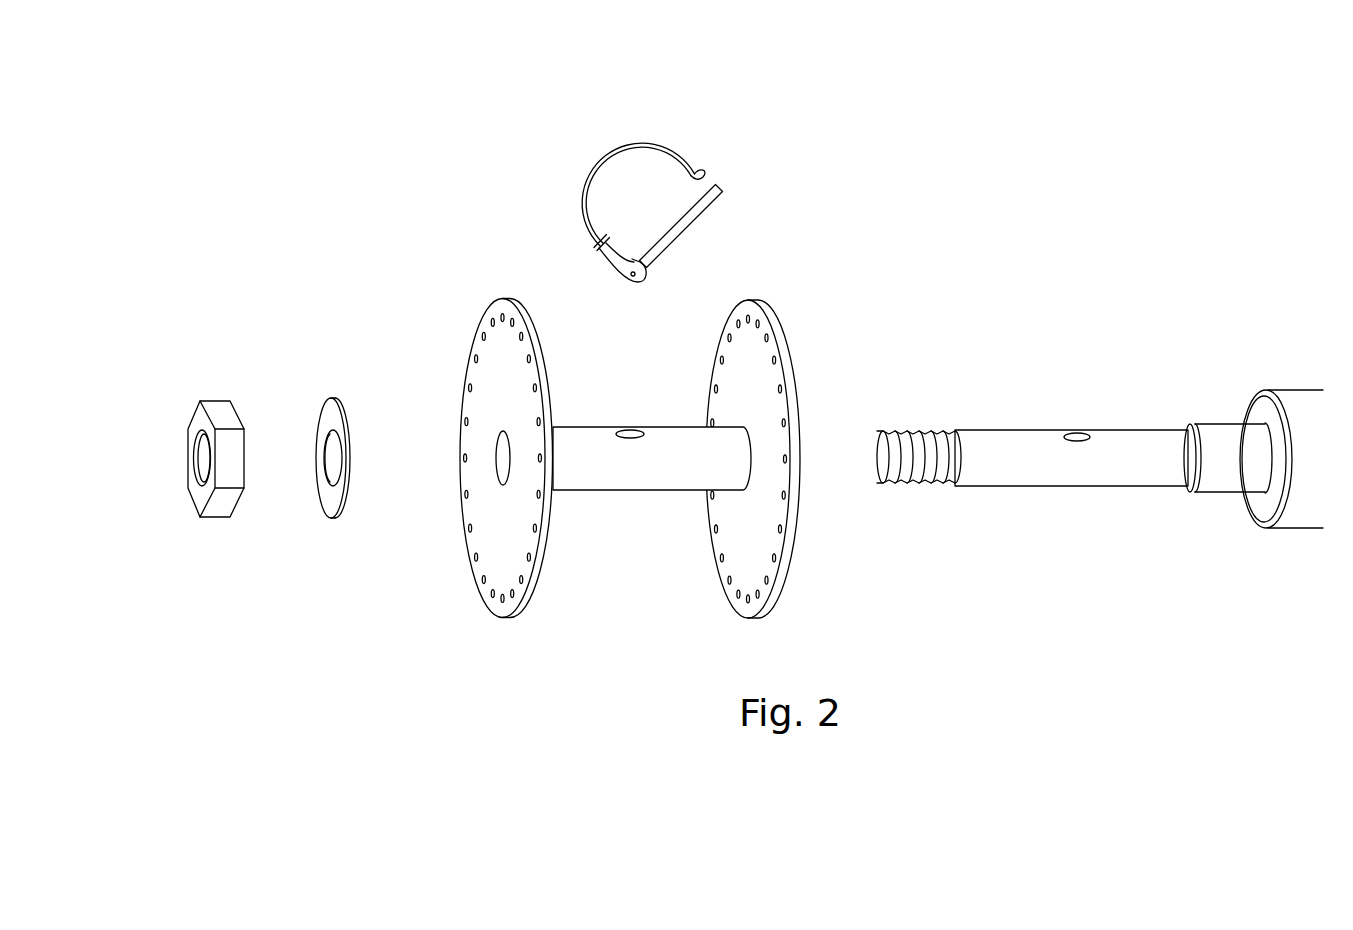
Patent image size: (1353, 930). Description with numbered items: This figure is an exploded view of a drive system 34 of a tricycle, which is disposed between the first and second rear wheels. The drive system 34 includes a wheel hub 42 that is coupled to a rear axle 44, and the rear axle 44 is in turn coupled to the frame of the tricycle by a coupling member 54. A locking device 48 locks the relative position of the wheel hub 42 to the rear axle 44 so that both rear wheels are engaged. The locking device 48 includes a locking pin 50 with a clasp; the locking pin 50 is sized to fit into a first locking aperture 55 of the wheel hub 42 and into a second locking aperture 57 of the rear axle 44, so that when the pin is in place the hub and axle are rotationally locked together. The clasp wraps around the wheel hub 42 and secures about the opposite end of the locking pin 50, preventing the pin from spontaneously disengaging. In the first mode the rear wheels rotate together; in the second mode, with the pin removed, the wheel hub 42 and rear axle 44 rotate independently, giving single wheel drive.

The drive system 34 is at (1180, 137).
The wheel hub 42 is at (630, 462).
The rear axle 44 is at (1084, 430).
The locking device 48 is at (643, 174).
The locking pin 50 is at (735, 175).
The coupling member 54 is at (238, 522).
The first locking aperture 55 is at (628, 428).
The second locking aperture 57 is at (1077, 430).